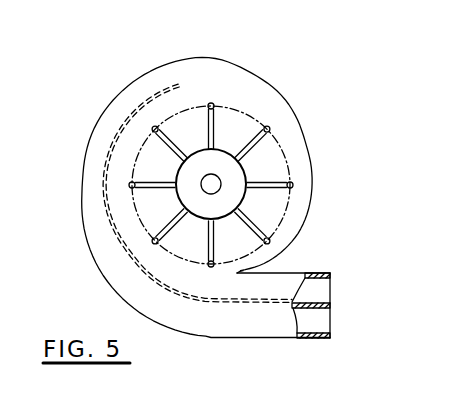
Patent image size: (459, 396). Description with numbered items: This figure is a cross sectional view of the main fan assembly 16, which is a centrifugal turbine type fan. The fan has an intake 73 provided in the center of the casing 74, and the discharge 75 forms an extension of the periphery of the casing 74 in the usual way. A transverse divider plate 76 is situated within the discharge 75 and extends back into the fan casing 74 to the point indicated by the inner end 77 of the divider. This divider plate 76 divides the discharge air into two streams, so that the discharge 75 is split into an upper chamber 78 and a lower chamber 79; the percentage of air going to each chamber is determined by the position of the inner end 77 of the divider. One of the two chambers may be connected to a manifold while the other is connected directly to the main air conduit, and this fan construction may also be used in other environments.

The fan assembly 16 is at (317, 188).
The intake 73 is at (196, 192).
The casing 74 is at (292, 142).
The discharge 75 is at (270, 323).
The transverse divider plate 76 is at (322, 305).
The inner end of the divider 77 is at (181, 83).
The upper chamber 78 is at (321, 290).
The lower chamber 79 is at (320, 325).